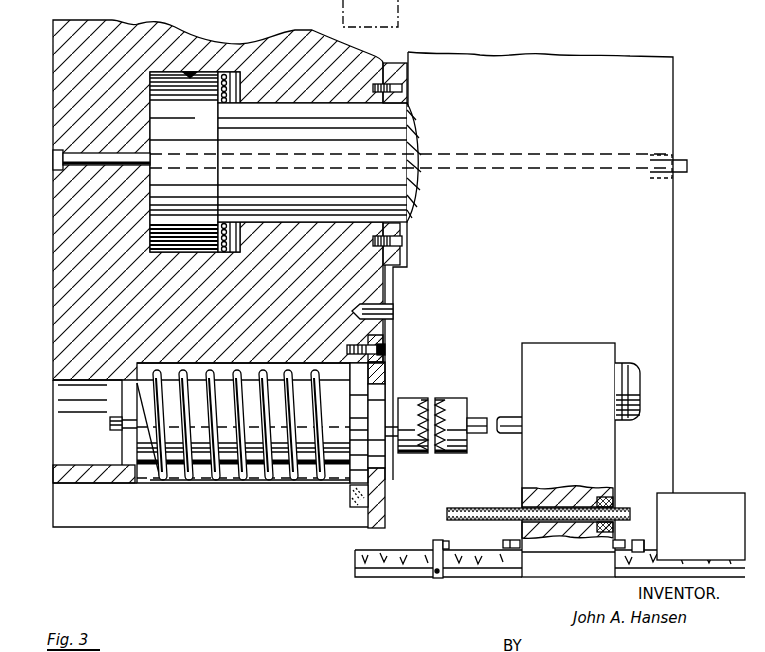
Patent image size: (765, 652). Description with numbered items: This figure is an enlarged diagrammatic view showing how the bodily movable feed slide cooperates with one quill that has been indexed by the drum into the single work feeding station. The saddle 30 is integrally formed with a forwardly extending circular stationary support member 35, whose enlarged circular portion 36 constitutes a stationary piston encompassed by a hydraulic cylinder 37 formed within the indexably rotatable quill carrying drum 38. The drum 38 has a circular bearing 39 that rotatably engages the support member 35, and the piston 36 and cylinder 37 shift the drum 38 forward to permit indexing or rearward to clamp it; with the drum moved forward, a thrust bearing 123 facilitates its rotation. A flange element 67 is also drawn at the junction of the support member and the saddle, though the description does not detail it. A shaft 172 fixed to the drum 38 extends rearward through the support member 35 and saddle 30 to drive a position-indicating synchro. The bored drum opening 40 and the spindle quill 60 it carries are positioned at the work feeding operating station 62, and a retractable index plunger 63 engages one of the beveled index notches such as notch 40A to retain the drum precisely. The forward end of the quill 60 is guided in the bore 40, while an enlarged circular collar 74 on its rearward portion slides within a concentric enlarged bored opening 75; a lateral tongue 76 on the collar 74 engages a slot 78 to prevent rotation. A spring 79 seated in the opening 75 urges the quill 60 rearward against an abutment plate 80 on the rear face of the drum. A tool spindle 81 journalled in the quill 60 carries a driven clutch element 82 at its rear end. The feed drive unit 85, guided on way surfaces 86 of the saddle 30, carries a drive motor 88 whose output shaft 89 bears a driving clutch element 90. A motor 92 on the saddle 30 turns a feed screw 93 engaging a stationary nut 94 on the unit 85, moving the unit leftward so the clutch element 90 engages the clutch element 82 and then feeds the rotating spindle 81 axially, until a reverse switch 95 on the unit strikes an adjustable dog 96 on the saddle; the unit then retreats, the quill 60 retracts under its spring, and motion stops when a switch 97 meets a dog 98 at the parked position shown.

The saddle 30 is at (490, 62).
The circular stationary support member 35 is at (397, 134).
The enlarged circular portion (stationary piston) 36 is at (180, 137).
The hydraulic cylinder 37 is at (190, 74).
The quill carrying drum 38 is at (70, 28).
The circular bearing 39 is at (306, 226).
The bored drum opening 40 is at (100, 462).
The index notch 40A is at (389, 303).
The spindle quill 60 is at (257, 388).
The work feeding operating station 62 is at (398, 5).
The index plunger 63 is at (393, 311).
The flange 67 is at (400, 80).
The circular collar 74 is at (372, 382).
The enlarged circular bored opening 75 is at (176, 364).
The lateral tongue 76 is at (357, 500).
The slot 78 is at (215, 524).
The spring 79 is at (163, 480).
The abutment plate 80 is at (374, 500).
The tool spindle 81 is at (110, 423).
The driven clutch element 82 is at (400, 448).
The feed drive unit 85 is at (590, 336).
The way surfaces 86 is at (486, 545).
The drive motor 88 is at (630, 385).
The output shaft 89 is at (491, 434).
The driving clutch element 90 is at (445, 408).
The motor 92 is at (695, 502).
The feed screw 93 is at (484, 508).
The stationary nut 94 is at (613, 501).
The reverse switch 95 is at (510, 544).
The adjustable dog 96 is at (436, 549).
The switch 97 is at (618, 545).
The dog 98 is at (644, 546).
The thrust bearing 123 is at (220, 103).
The shaft 172 is at (70, 155).